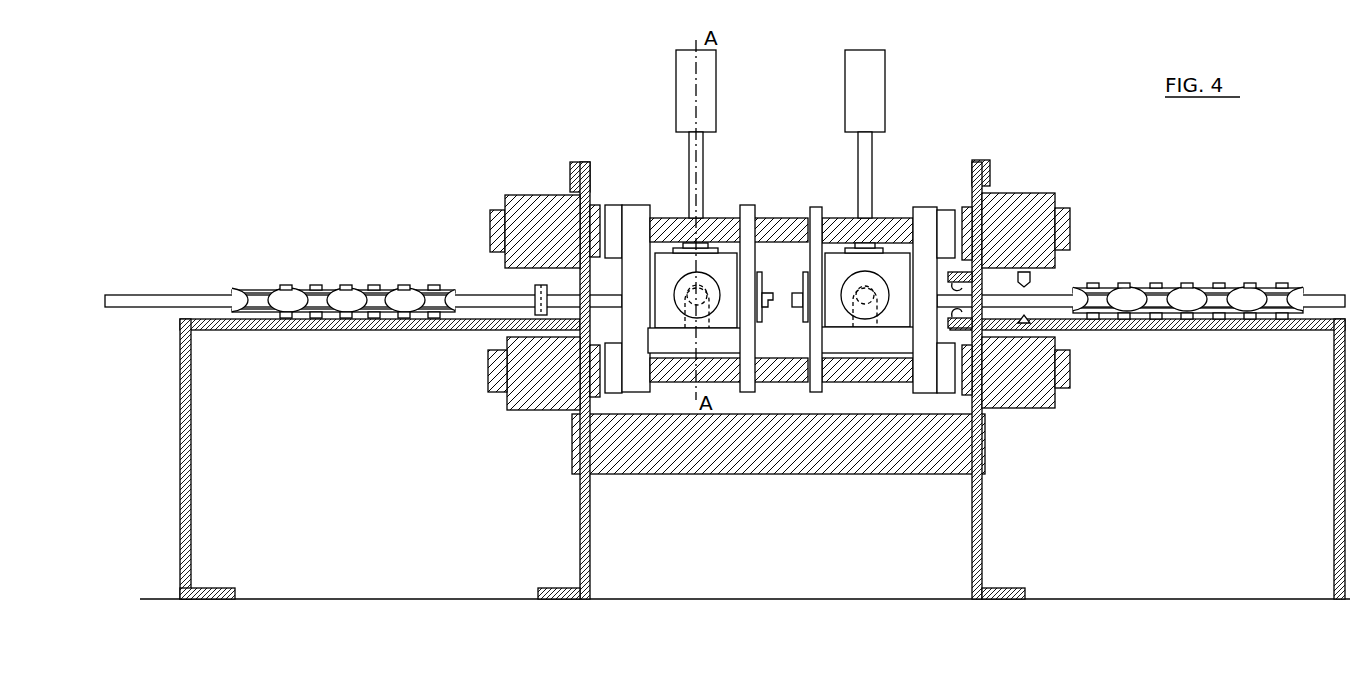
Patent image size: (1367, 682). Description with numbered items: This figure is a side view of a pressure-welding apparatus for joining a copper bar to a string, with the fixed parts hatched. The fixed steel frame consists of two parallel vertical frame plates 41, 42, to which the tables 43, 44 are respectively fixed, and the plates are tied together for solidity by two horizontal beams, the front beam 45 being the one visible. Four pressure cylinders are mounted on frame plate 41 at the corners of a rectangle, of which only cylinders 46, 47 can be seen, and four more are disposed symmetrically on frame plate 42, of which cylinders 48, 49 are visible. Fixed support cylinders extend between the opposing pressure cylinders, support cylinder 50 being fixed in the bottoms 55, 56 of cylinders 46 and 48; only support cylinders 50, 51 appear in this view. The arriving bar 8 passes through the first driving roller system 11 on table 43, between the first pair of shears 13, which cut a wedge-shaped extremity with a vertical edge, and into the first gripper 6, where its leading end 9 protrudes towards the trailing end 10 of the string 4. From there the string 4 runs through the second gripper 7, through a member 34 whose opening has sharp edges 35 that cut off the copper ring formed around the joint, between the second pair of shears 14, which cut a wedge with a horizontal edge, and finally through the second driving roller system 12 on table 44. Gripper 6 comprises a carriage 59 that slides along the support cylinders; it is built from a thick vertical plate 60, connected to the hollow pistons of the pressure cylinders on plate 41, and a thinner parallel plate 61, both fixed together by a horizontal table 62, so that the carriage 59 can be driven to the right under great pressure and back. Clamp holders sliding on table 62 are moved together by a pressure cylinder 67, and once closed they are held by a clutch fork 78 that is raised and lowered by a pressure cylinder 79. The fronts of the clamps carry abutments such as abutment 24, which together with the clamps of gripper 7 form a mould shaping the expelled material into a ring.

The string 4 is at (1322, 298).
The first gripper 6 is at (720, 245).
The second gripper 7 is at (858, 185).
The arriving bar 8 is at (150, 300).
The leading end 9 is at (766, 303).
The trailing end 10 is at (792, 305).
The first driving roller system 11 is at (260, 300).
The second driving roller system 12 is at (1207, 296).
The first pair of shears 13 is at (537, 292).
The second pair of shears 14 is at (1030, 278).
The abutment 24 is at (758, 323).
The member having an opening with sharp edges 34 is at (963, 262).
The sharp edges 35 is at (962, 326).
The frame plate 41 is at (580, 535).
The frame plate 42 is at (982, 553).
The table 43 is at (238, 330).
The table 44 is at (1318, 330).
The front beam 45 is at (808, 460).
The pressure cylinder 46 is at (523, 200).
The pressure cylinder 47 is at (527, 383).
The pressure cylinder 48 is at (1023, 197).
The pressure cylinder 49 is at (1048, 380).
The support cylinder 50 is at (790, 218).
The support cylinder 51 is at (795, 320).
The bottom 55 is at (495, 228).
The bottom 56 is at (1070, 222).
The carriage 59 is at (737, 352).
The thick vertical plate 60 is at (637, 212).
The second plate 61 is at (745, 212).
The horizontal table 62 is at (678, 345).
The pressure cylinder 67 is at (710, 290).
The clutch fork 78 is at (663, 265).
The pressure cylinder 79 is at (685, 93).